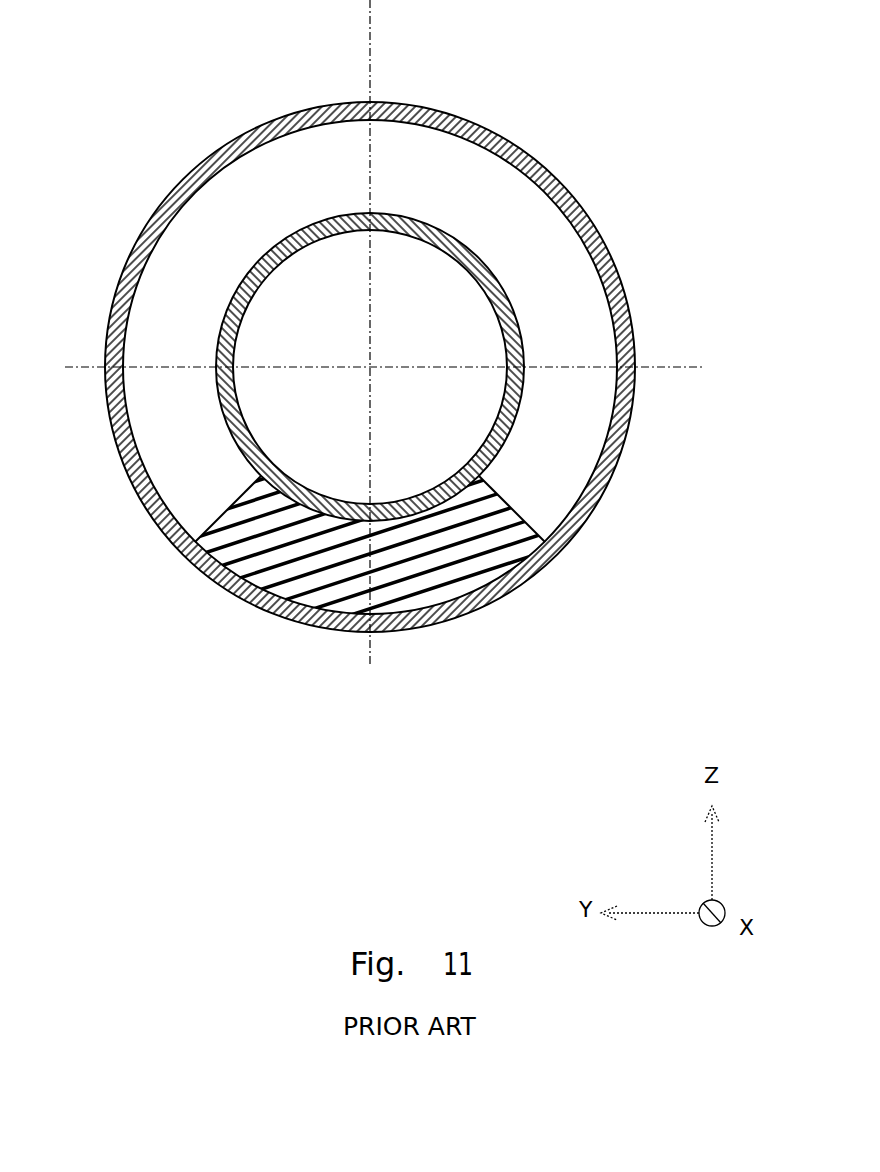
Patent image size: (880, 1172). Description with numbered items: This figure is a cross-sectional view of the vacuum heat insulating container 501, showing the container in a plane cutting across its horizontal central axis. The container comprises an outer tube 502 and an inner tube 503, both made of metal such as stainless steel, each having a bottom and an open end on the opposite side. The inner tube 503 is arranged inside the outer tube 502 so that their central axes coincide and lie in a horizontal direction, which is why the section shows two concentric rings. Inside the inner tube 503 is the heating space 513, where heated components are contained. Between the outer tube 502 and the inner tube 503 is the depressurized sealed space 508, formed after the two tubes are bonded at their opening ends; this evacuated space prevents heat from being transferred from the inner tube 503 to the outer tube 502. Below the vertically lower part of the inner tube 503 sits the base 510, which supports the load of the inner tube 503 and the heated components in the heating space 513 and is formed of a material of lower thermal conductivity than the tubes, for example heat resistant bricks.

The vacuum heat insulating container 501 is at (82, 43).
The outer tube 502 is at (620, 453).
The inner tube 503 is at (515, 315).
The depressurized sealed space 508 is at (233, 222).
The base 510 is at (482, 548).
The heating space 513 is at (348, 282).